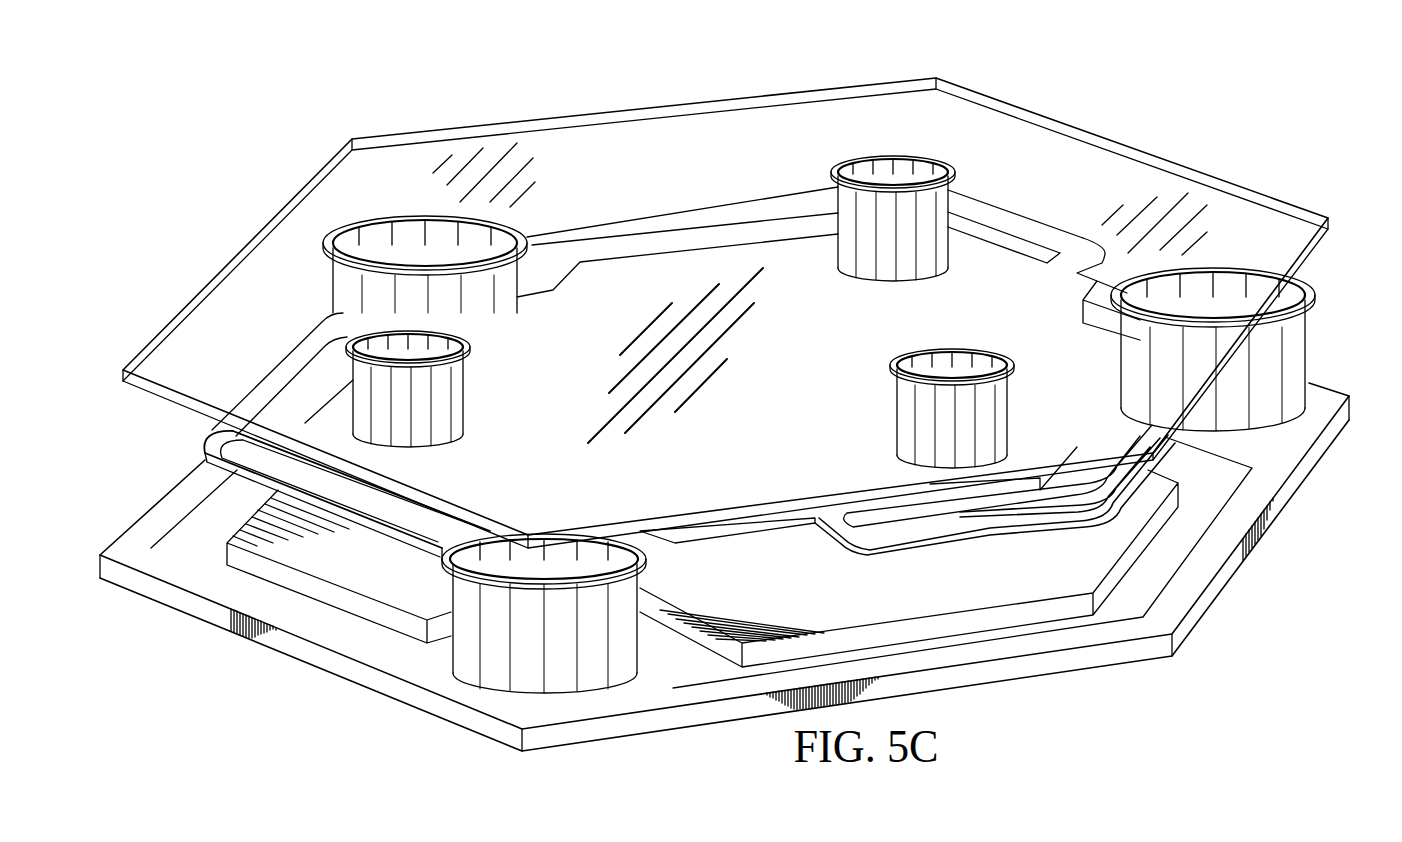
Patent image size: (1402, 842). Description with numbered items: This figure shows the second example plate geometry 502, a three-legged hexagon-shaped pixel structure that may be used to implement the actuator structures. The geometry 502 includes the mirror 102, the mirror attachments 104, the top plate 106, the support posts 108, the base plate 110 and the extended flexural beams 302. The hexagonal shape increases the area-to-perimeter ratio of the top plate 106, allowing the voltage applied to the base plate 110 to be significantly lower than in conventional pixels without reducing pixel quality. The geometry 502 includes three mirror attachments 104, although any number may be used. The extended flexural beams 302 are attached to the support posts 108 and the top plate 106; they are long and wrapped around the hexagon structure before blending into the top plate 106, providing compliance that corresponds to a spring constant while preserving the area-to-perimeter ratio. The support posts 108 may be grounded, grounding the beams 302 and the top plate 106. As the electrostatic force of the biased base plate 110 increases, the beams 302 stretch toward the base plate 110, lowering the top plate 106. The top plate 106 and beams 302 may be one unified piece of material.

The second example plate geometry 502 is at (295, 90).
The mirror 102 is at (622, 135).
The mirror attachments 104 is at (882, 276).
The top plate 106 is at (733, 523).
The support posts 108 is at (1307, 358).
The base plate 110 is at (1108, 547).
The extended flexural beams 302 is at (208, 431).